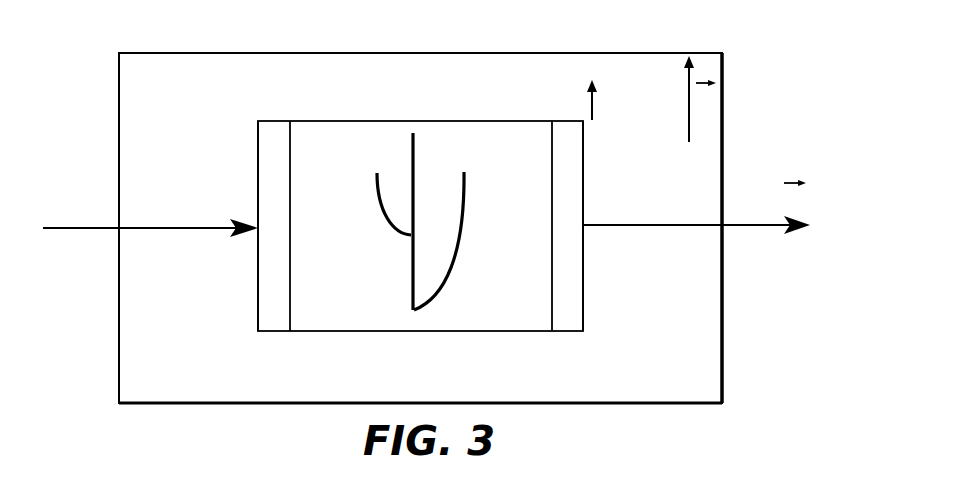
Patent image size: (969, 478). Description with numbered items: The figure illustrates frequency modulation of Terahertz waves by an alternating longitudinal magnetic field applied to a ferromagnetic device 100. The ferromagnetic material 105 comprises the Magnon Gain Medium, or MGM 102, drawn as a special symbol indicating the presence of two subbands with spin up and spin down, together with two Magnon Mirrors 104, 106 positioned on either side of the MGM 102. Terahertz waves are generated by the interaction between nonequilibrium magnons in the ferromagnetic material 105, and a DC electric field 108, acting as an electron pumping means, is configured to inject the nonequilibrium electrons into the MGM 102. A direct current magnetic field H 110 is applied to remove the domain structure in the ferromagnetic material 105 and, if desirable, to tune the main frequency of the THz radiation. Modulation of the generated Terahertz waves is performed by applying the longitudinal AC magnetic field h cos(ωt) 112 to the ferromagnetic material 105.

The magnetoelectric device 100 is at (197, 419).
The Magnon Gain Medium (MGM) 102 is at (415, 165).
The Magnon Mirror 104 is at (567, 158).
The ferromagnetic material 105 is at (375, 319).
The Magnon Mirror 106 is at (263, 162).
The DC electric field 108 is at (755, 228).
The DC magnetic field H 110 is at (688, 94).
The longitudinal AC magnetic field h cos(ωt) 112 is at (590, 106).